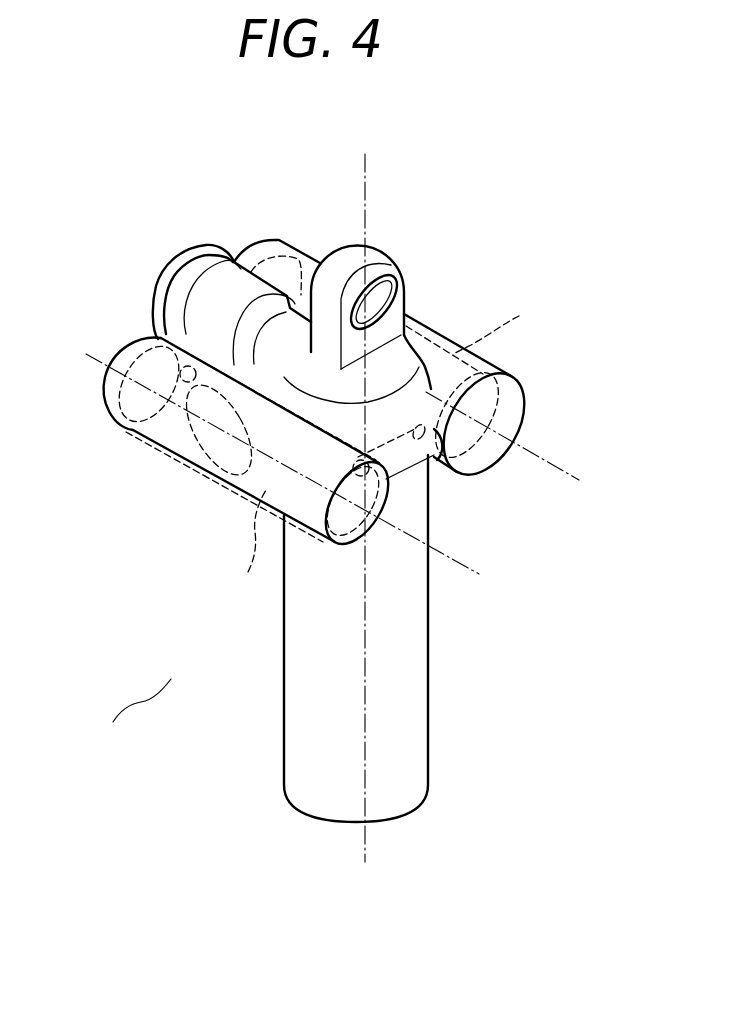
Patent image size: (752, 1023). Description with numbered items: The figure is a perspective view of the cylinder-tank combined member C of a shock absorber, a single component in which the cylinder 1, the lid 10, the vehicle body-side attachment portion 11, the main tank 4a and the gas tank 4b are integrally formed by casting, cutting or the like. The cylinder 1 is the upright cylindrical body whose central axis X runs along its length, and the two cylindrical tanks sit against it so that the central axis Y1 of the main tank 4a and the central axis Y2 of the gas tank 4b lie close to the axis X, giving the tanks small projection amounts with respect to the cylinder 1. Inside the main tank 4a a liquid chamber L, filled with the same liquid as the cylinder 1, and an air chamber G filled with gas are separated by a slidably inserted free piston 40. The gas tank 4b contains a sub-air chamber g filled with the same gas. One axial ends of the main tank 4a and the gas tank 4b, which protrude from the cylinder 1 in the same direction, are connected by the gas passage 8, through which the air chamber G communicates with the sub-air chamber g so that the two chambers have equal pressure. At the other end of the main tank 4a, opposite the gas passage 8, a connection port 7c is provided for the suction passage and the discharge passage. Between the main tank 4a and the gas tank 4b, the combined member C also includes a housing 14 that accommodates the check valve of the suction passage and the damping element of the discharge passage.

The cylinder 1 is at (427, 752).
The main tank 4a is at (104, 383).
The gas tank 4b is at (525, 402).
The connection port 7c is at (187, 362).
The gas passage 8 is at (414, 455).
The lid 10 is at (383, 350).
The vehicle body-side attachment portion 11 is at (349, 254).
The housing 14 is at (238, 278).
The free piston 40 is at (195, 462).
The cylinder-tank combined member C is at (180, 667).
The air chamber G is at (272, 478).
The sub-air chamber g is at (436, 362).
The liquid chamber L is at (216, 394).
The central axis of the cylinder X is at (365, 488).
The central axis of the main tank Y1 is at (298, 474).
The central axis of the gas tank Y2 is at (519, 445).